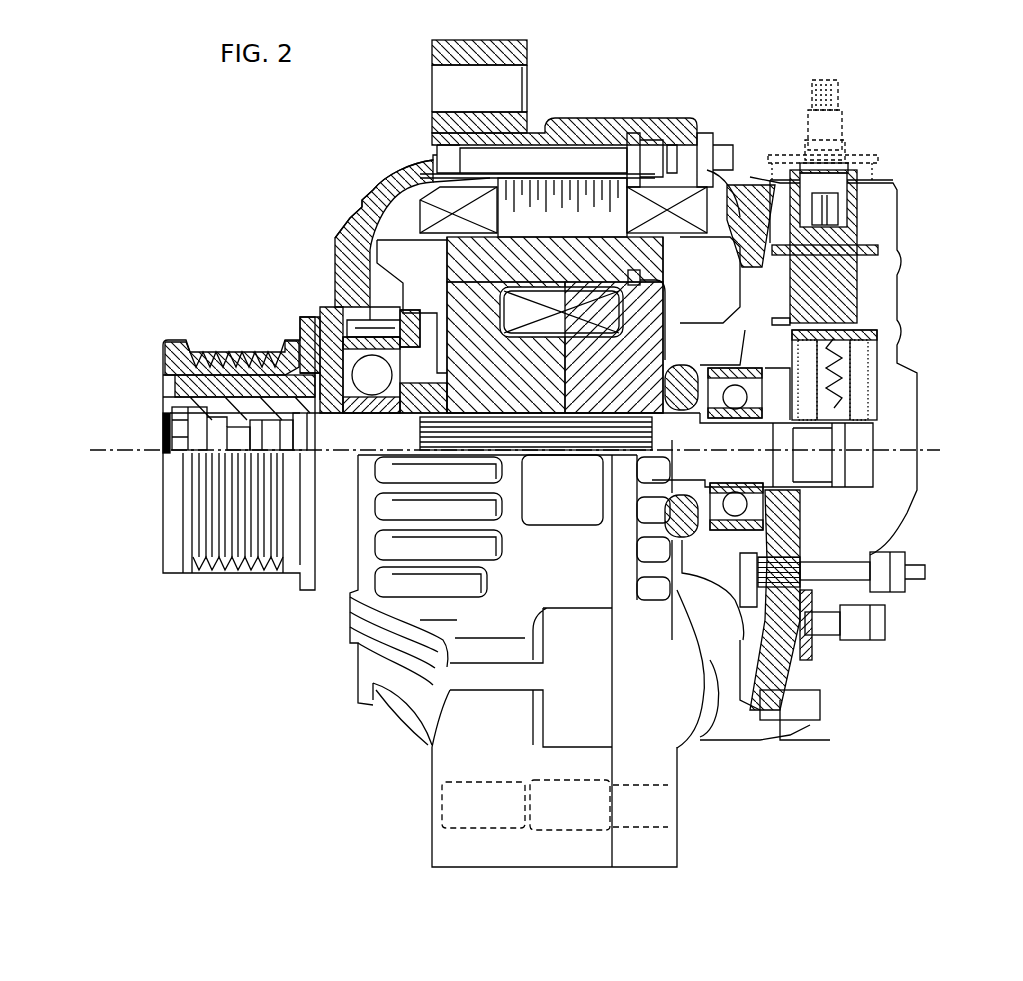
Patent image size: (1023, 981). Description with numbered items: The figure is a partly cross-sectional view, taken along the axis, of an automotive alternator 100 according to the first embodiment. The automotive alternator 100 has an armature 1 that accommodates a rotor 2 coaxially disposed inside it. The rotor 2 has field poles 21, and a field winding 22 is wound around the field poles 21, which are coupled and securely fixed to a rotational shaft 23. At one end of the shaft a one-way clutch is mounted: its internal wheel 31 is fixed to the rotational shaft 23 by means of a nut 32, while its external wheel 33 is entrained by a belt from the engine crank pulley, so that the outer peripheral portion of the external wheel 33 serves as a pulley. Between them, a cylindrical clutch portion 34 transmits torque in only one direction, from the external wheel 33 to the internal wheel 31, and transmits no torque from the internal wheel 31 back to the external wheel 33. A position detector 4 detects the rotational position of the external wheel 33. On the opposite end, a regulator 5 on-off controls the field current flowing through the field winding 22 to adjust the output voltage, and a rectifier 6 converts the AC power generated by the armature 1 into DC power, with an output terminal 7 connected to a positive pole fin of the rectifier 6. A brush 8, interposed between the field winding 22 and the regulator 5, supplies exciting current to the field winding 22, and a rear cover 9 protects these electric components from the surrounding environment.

The automotive alternator 100 is at (773, 47).
The armature 1 is at (593, 250).
The rotor 2 is at (525, 250).
The position detector 4 is at (333, 307).
The regulator 5 is at (830, 243).
The rectifier 6 is at (903, 508).
The output terminal 7 is at (845, 100).
The brush 8 is at (868, 378).
The rear cover 9 is at (898, 285).
The field poles 21 is at (620, 135).
The field winding 22 is at (548, 432).
The rotational shaft 23 is at (590, 437).
The internal wheel 31 is at (172, 408).
The nut 32 is at (163, 437).
The external wheel 33 is at (177, 340).
The clutch portion 34 is at (225, 340).